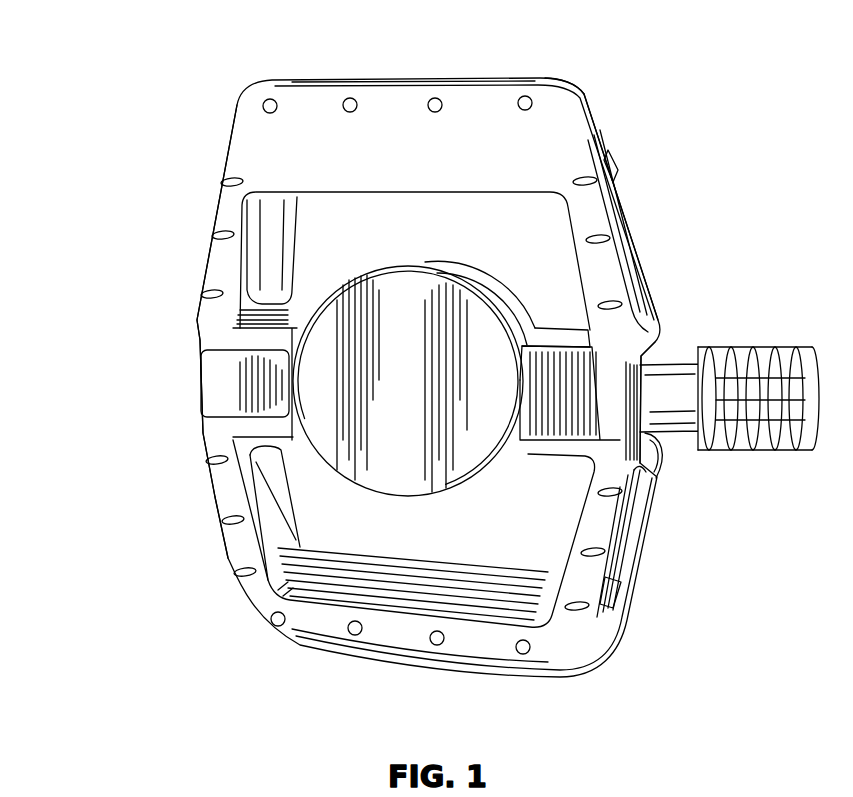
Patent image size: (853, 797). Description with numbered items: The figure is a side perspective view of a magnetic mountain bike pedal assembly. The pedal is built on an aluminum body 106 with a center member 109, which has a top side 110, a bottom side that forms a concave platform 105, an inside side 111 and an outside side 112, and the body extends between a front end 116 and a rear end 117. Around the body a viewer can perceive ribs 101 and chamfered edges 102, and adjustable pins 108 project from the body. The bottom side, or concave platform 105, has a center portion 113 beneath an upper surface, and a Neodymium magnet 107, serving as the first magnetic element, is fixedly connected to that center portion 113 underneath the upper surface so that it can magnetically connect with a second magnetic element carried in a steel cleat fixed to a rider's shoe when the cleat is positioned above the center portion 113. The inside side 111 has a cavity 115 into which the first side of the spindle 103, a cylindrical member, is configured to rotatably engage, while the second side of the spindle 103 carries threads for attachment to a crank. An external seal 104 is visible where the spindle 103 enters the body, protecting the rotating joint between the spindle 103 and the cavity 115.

The ribs 101 is at (618, 166).
The chamfered edges 102 is at (640, 262).
The spindle 103 is at (710, 346).
The external seal 104 is at (656, 437).
The concave platform 105 is at (618, 585).
The aluminum body 106 is at (245, 125).
The Neodymium magnet 107 is at (395, 305).
The adjustable pins 108 is at (432, 100).
The center member 109 is at (595, 100).
The top side 110 is at (643, 545).
The inside side 111 is at (655, 285).
The outside side 112 is at (198, 318).
The center portion 113 is at (222, 378).
The cavity 115 is at (650, 357).
The front end 116 is at (487, 78).
The rear end 117 is at (475, 678).